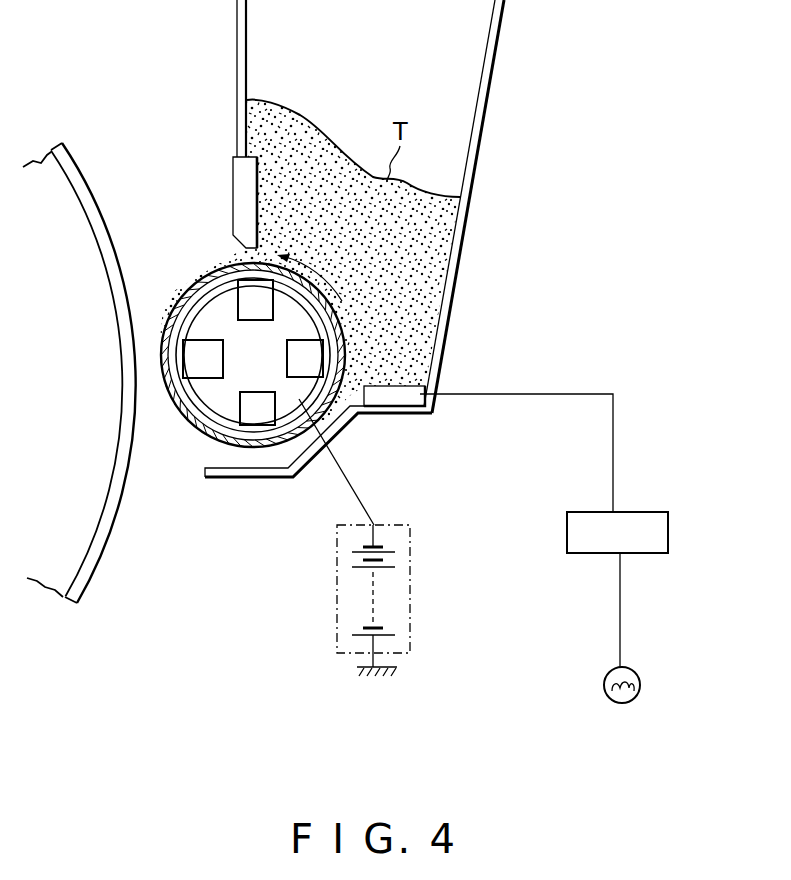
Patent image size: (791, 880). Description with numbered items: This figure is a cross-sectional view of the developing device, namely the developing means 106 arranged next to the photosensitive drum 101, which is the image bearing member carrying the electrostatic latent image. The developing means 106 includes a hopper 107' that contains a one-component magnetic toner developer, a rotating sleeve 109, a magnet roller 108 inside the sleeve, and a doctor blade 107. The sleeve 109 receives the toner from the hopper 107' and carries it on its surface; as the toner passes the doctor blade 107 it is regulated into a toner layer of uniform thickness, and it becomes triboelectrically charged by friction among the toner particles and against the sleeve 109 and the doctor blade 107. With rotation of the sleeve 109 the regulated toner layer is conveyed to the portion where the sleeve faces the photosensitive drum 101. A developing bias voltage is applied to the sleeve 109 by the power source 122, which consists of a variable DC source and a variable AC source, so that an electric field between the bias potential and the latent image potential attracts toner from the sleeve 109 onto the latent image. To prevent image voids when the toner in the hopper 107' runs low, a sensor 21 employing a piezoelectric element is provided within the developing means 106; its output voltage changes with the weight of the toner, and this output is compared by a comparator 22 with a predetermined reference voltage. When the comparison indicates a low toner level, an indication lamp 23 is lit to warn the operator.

The photosensitive drum 101 is at (109, 327).
The developing means 106 is at (494, 265).
The doctor blade 107 is at (203, 124).
The hopper 107' is at (497, 206).
The magnet roller 108 is at (332, 413).
The sleeve 109 is at (193, 423).
The sensor 21 is at (438, 401).
The comparator 22 is at (650, 512).
The indication lamp 23 is at (641, 686).
The power source 122 is at (412, 605).